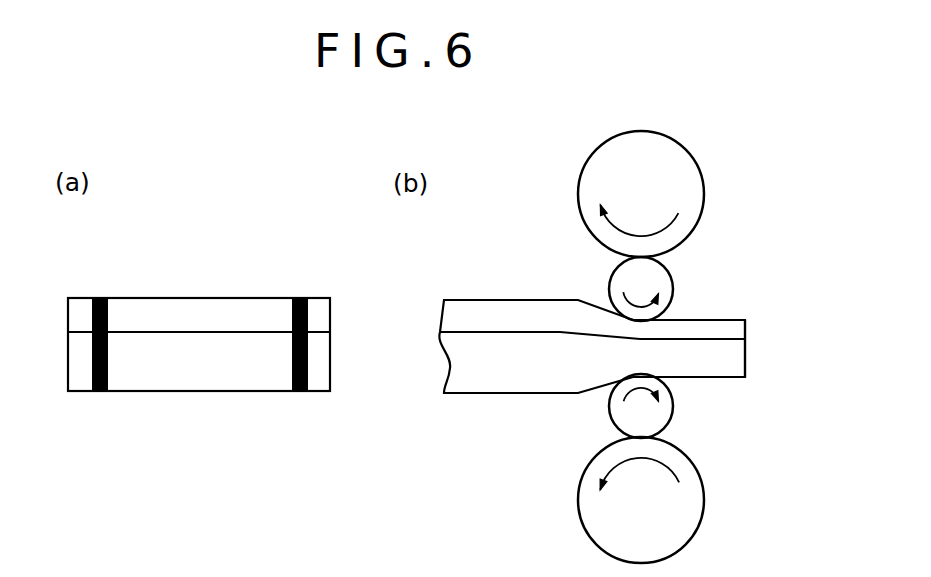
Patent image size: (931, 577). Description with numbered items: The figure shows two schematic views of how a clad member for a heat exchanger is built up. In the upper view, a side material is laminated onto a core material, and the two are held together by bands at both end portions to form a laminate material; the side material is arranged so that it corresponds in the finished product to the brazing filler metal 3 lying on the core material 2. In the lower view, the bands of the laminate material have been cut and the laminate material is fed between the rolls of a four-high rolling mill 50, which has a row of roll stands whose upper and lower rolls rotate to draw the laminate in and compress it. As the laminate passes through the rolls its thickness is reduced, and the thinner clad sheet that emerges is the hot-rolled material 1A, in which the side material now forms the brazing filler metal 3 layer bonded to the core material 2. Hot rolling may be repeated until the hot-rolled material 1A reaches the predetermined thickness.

The brazing filler metal 3 is at (714, 327).
The 4-high rolling mill 50 is at (653, 128).
The core material 2 is at (720, 365).
The hot-rolled material 1A is at (757, 330).